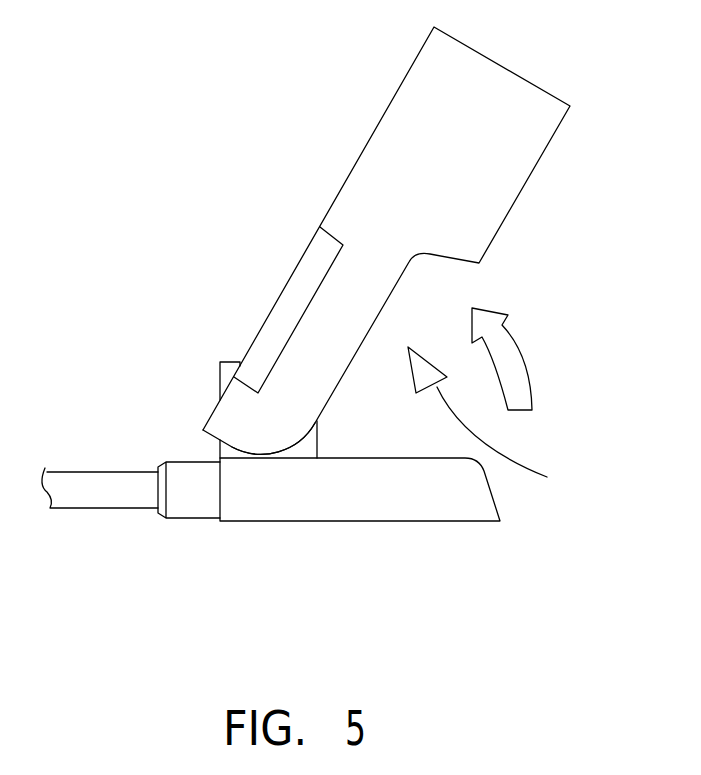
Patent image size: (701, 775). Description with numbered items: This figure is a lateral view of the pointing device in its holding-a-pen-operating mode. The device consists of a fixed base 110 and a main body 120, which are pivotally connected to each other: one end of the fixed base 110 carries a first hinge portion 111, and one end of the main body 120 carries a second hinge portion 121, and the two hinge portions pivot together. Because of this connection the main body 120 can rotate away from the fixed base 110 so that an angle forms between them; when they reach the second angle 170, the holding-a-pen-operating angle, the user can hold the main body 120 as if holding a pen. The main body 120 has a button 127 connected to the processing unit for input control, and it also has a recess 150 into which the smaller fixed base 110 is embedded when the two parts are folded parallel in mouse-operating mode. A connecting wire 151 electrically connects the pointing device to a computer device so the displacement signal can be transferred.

The fixed base 110 is at (418, 508).
The first hinge portion 111 is at (222, 364).
The main body 120 is at (397, 137).
The second hinge portion 121 is at (223, 420).
The button 127 is at (290, 296).
The recess 150 is at (502, 415).
The connecting wire 151 is at (102, 495).
The second angle 170 is at (508, 352).